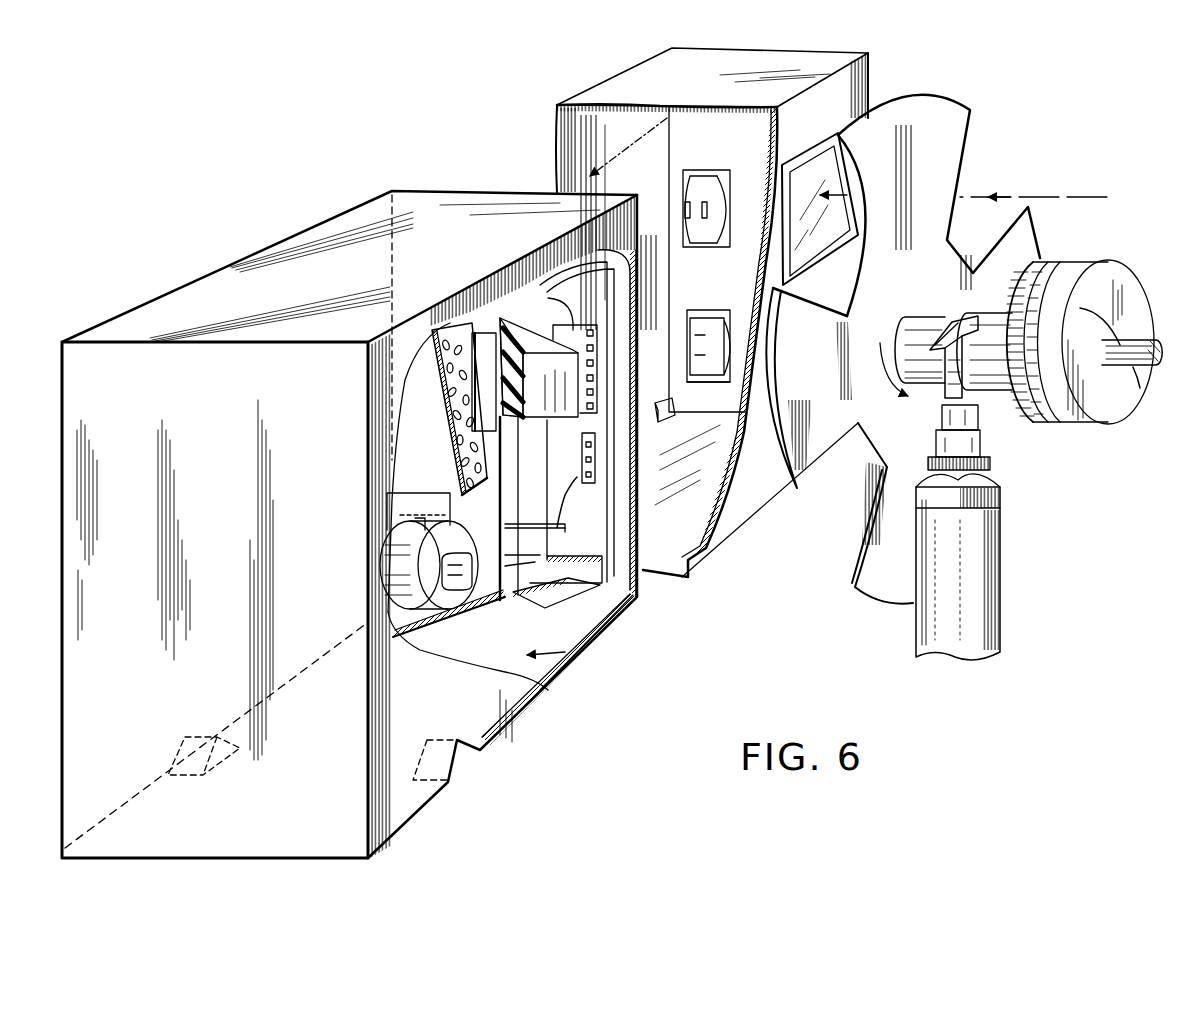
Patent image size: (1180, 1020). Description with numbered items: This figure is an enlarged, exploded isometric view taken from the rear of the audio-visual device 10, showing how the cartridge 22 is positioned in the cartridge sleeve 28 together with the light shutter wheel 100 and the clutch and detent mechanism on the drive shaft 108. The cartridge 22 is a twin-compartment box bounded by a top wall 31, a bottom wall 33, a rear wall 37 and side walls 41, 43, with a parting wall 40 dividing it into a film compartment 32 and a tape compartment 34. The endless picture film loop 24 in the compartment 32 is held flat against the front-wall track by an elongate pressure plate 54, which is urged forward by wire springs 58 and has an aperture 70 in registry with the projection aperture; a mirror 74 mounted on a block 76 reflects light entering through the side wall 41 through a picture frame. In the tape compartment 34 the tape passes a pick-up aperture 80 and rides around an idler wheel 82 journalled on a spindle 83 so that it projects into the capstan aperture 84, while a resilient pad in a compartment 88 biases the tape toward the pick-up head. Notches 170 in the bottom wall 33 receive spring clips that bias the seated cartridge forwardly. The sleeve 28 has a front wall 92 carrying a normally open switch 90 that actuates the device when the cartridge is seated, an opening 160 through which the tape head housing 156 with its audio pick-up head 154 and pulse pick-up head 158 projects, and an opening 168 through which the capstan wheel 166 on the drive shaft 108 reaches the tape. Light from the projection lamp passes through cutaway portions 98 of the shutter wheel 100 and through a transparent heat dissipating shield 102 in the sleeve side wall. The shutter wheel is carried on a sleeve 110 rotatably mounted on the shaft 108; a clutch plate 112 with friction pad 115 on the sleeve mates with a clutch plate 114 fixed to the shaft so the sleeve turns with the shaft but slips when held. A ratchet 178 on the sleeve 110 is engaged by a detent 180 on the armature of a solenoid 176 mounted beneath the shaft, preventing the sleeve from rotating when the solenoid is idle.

The cartridge 22 is at (230, 306).
The top wall 31 is at (373, 238).
The rear wall 37 is at (112, 610).
The side wall 43 is at (112, 512).
The bottom wall 33 is at (351, 526).
The notches 170 is at (168, 737).
The wire springs 58 is at (640, 590).
The pressure plate 54 is at (637, 462).
The side wall 41 is at (520, 700).
The compartment 32 is at (580, 658).
The tape compartment 34 is at (563, 620).
The endless picture film loop 24 is at (605, 613).
The compartment 88 is at (415, 467).
The spindle 83 is at (444, 568).
The idler wheel 82 is at (457, 608).
The pick-up aperture 80 is at (512, 453).
The block 76 is at (552, 407).
The mirror 74 is at (578, 382).
The audio-visual device 10 is at (590, 316).
The aperture 70 is at (573, 330).
The parting wall 40 is at (508, 500).
The capstan aperture 84 is at (508, 522).
The cartridge sleeve 28 is at (720, 548).
The front wall 92 is at (656, 208).
The opening 160 is at (708, 250).
The tape head housing 156 is at (723, 230).
The pick-up head 158 is at (687, 204).
The audio track tape pick-up head 154 is at (727, 205).
The opening 168 is at (700, 292).
The capstan wheel 166 is at (705, 385).
The switch 90 is at (672, 415).
The heat dissipating shield 102 is at (822, 170).
The light shutter wheel 100 is at (853, 478).
The cutaway portions 98 is at (962, 118).
The sleeve 110 is at (920, 318).
The ratchet 178 is at (947, 313).
The clutch plate 114 is at (1093, 258).
The clutch plate 112 is at (1057, 262).
The friction pad 115 is at (1073, 262).
The drive shaft 108 is at (1152, 345).
The detent 180 is at (990, 455).
The solenoid 176 is at (985, 607).